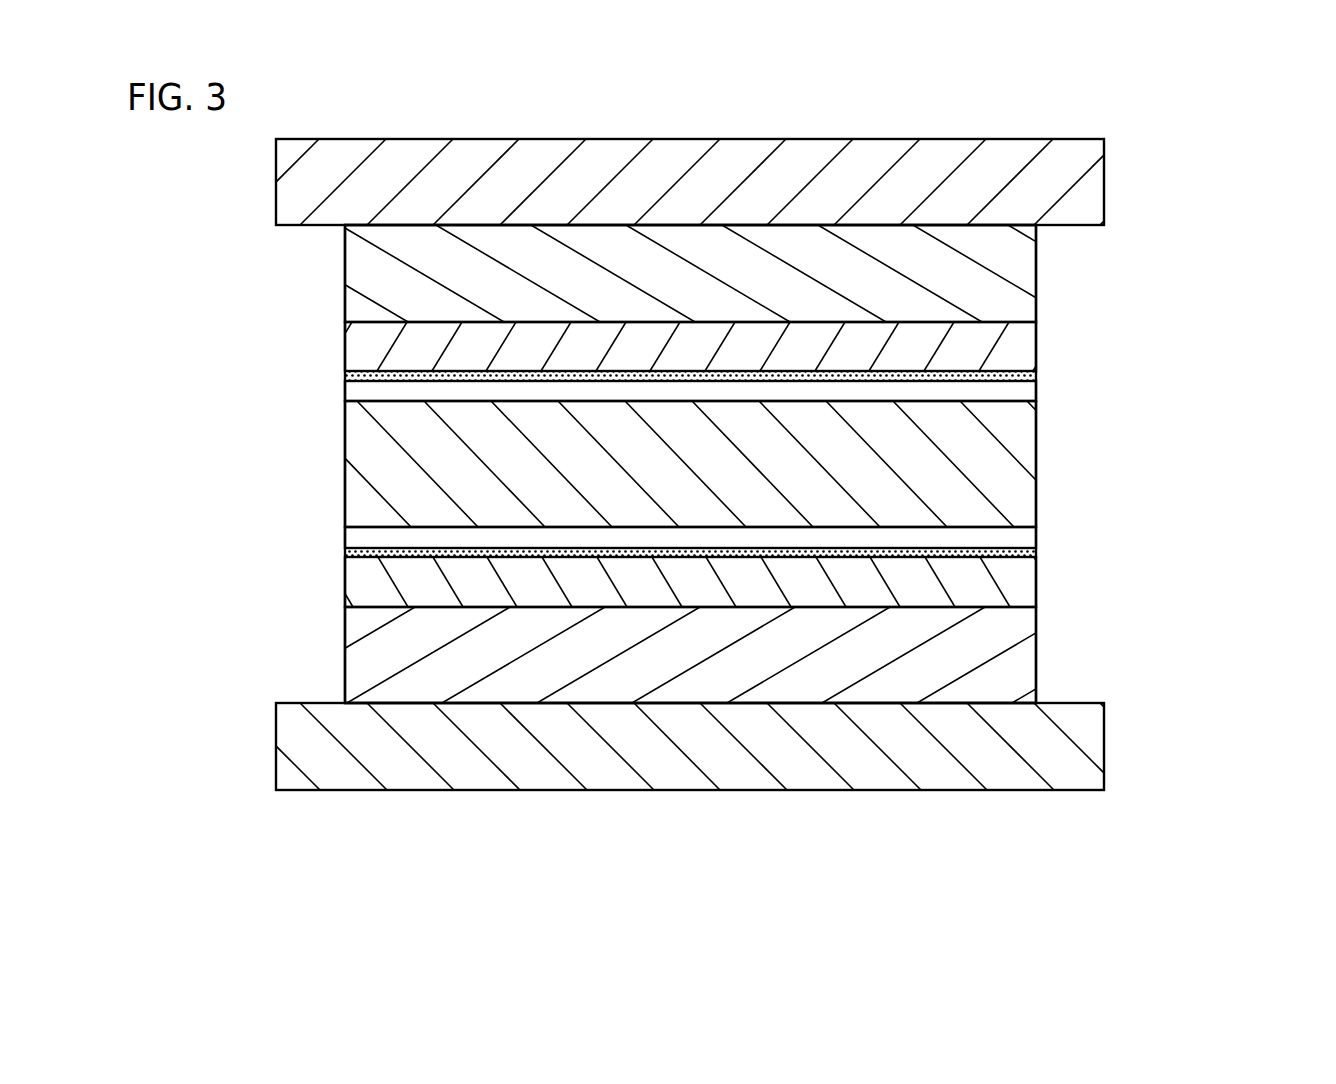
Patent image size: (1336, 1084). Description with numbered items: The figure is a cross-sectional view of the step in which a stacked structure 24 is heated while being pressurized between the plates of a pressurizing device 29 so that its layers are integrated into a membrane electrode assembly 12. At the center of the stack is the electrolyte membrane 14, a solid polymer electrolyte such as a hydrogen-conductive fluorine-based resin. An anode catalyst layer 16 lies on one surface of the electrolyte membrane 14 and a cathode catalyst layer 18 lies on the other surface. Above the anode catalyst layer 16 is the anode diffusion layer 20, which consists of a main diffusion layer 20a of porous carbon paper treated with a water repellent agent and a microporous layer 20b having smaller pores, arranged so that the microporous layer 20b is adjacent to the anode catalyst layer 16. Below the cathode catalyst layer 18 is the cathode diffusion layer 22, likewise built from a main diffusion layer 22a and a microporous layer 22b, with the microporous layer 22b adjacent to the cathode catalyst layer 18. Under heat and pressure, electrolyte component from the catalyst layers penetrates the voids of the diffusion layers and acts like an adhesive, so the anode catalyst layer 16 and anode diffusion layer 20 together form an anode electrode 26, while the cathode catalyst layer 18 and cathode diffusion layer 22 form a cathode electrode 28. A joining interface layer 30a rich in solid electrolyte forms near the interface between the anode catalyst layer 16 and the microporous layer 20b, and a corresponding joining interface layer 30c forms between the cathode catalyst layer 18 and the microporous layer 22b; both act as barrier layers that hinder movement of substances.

The membrane electrode assembly 12 is at (1150, 255).
The stacked structure 24 is at (662, 464).
The electrolyte membrane 14 is at (1005, 463).
The anode catalyst layer 16 is at (1025, 389).
The cathode catalyst layer 18 is at (1025, 538).
The anode diffusion layer 20 is at (1115, 277).
The main diffusion layer 20a is at (1022, 295).
The microporous layer 20b is at (1018, 343).
The cathode diffusion layer 22 is at (1115, 575).
The main diffusion layer 22a is at (1022, 633).
The microporous layer 22b is at (1018, 587).
The anode electrode 26 is at (315, 228).
The cathode electrode 28 is at (315, 532).
The pressurizing device 29 is at (1093, 180).
The joining interface layer 30a is at (1036, 378).
The joining interface layer 30c is at (1036, 553).